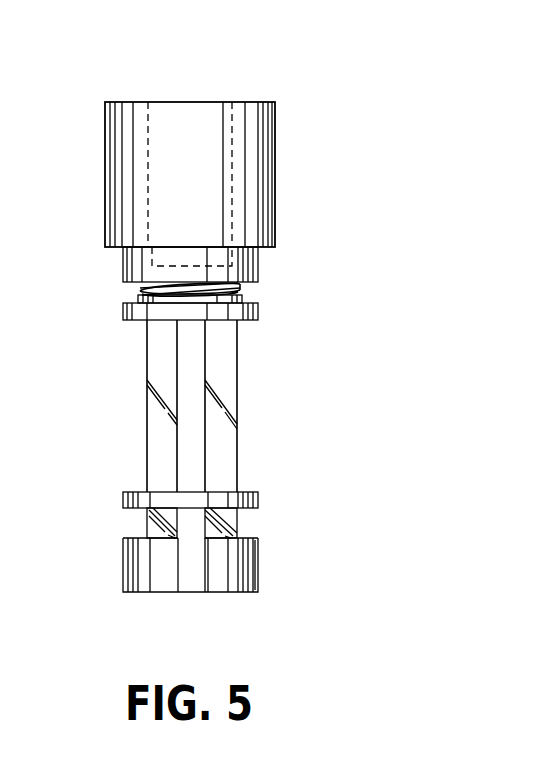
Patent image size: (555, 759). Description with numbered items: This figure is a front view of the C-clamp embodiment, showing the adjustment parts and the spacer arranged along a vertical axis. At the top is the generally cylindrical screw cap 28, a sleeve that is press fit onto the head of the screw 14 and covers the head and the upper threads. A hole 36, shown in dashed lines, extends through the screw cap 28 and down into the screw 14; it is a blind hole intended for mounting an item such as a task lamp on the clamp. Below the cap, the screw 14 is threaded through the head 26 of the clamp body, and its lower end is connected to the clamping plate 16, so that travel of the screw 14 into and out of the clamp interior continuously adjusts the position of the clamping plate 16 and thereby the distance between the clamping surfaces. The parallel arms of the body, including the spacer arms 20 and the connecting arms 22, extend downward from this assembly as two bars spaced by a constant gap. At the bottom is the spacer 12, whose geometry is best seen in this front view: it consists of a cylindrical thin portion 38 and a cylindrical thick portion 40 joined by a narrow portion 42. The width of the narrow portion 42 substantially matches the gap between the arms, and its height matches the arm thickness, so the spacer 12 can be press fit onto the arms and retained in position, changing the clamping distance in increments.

The spacer 12 is at (258, 557).
The screw 14 is at (240, 290).
The clamping plate 16 is at (258, 312).
The spacer arms 20 is at (152, 524).
The connecting arms 22 is at (147, 408).
The head 26 is at (258, 262).
The screw cap 28 is at (275, 168).
The hole 36 is at (223, 128).
The thin portion 38 is at (258, 502).
The thick portion 40 is at (258, 580).
The narrow portion 42 is at (188, 527).